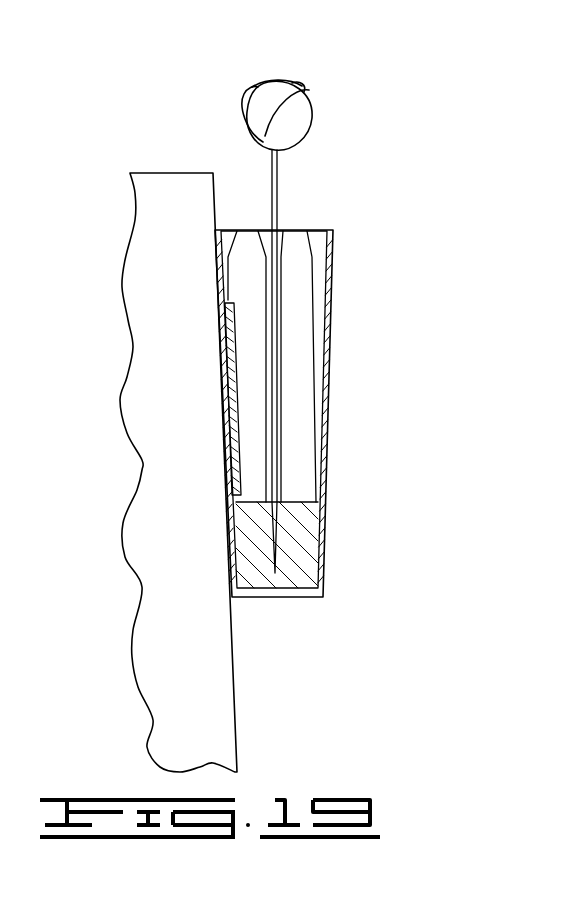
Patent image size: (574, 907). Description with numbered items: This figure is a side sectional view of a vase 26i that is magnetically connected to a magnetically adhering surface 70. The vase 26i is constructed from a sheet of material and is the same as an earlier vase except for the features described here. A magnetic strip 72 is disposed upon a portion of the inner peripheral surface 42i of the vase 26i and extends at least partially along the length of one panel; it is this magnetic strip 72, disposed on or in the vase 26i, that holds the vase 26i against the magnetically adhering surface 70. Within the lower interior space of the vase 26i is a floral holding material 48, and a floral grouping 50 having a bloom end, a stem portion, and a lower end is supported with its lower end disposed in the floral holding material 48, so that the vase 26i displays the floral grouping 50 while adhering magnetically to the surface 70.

The magnetically adhering surface 70 is at (216, 195).
The vase 26i is at (327, 363).
The inner peripheral surface 42i is at (282, 343).
The magnetic strip 72 is at (228, 372).
The floral holding material 48 is at (251, 530).
The floral grouping 50 is at (248, 88).